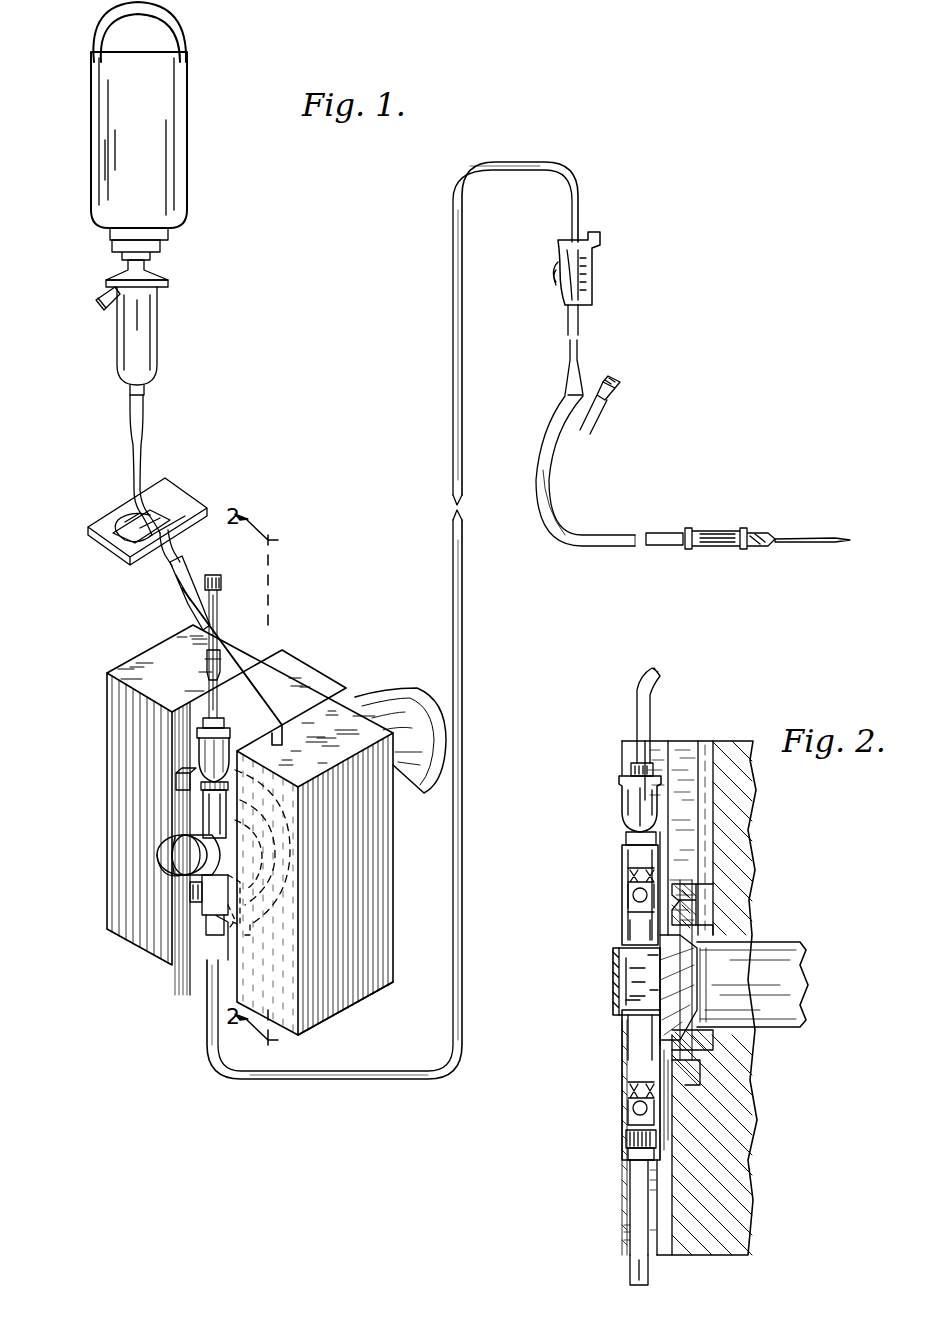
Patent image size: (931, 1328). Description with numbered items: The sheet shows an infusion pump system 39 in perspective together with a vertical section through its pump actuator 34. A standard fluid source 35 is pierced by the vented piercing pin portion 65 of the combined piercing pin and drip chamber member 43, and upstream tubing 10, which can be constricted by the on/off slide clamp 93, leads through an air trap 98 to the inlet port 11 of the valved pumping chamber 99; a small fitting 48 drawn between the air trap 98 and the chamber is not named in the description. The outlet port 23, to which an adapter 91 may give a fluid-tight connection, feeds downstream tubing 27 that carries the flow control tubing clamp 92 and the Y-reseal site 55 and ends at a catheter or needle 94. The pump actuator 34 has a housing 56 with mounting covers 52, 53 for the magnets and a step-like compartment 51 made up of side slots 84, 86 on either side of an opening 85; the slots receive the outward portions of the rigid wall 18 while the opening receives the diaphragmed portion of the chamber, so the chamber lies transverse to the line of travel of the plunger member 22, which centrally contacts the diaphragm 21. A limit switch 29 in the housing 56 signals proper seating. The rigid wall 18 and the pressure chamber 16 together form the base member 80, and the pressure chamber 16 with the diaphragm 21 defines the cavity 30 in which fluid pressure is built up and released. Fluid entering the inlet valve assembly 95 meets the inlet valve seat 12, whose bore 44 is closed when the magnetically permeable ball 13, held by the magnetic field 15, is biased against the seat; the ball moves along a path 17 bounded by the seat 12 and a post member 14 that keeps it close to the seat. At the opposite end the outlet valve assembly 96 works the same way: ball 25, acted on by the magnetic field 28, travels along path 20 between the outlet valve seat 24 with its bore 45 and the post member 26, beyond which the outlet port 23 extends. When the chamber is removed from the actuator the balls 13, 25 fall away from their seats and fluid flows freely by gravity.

In FIG. 1, the upstream tubing 10 is at (135, 460).
In FIG. 2, the upstream tubing 10 is at (642, 685).
In FIG. 1, the inlet port 11 is at (228, 786).
In FIG. 2, the inlet port 11 is at (626, 840).
In FIG. 2, the inlet valve seat 12 is at (628, 874).
In FIG. 2, the inlet flow restricting ball 13 is at (630, 900).
In FIG. 2, the inlet post member 14 is at (628, 935).
In FIG. 1, the magnetic field 15 is at (176, 785).
In FIG. 2, the pressure chamber 16 is at (660, 1005).
In FIG. 2, the path 17 is at (628, 914).
In FIG. 1, the rigid wall 18 is at (259, 852).
In FIG. 2, the rigid wall 18 is at (705, 1075).
In FIG. 2, the path 20 is at (626, 1138).
In FIG. 2, the diaphragm 21 is at (658, 1020).
In FIG. 2, the plunger member 22 is at (805, 962).
In FIG. 1, the outlet port 23 is at (212, 930).
In FIG. 2, the outlet port 23 is at (632, 1155).
In FIG. 2, the outlet valve seat 24 is at (628, 1088).
In FIG. 2, the outlet flow restricting ball 25 is at (634, 1110).
In FIG. 2, the outlet post member 26 is at (630, 1122).
In FIG. 1, the downstream tubing 27 is at (228, 1077).
In FIG. 2, the downstream tubing 27 is at (648, 1275).
In FIG. 1, the magnetic field 28 is at (190, 893).
In FIG. 2, the limit switch 29 is at (750, 1118).
In FIG. 2, the cavity 30 is at (626, 978).
In FIG. 1, the pump actuator 34 is at (400, 825).
In FIG. 2, the pump actuator 34 is at (770, 880).
In FIG. 1, the fluid source 35 is at (98, 108).
In FIG. 1, the infusion pump system 39 is at (118, 630).
In FIG. 1, the drip chamber 43 is at (120, 366).
In FIG. 2, the inlet bore 44 is at (633, 893).
In FIG. 2, the outlet bore 45 is at (625, 1075).
In FIG. 1, the inlet connector 48 is at (222, 715).
In FIG. 2, the inlet connector 48 is at (631, 770).
In FIG. 1, the compartment 51 is at (224, 690).
In FIG. 2, the compartment 51 is at (675, 741).
In FIG. 1, the mounting cover 52 is at (112, 842).
In FIG. 1, the mounting cover 53 is at (310, 1022).
In FIG. 1, the Y-reseal site 55 is at (585, 430).
In FIG. 1, the pump actuator housing 56 is at (395, 958).
In FIG. 1, the vented piercing pin portion 65 is at (120, 262).
In FIG. 2, the base member 80 is at (690, 895).
In FIG. 1, the side slot 84 is at (180, 690).
In FIG. 2, the side slot 84 is at (686, 752).
In FIG. 1, the opening 85 is at (290, 680).
In FIG. 2, the opening 85 is at (712, 752).
In FIG. 1, the side slot 86 is at (286, 736).
In FIG. 2, the adapter 91 is at (628, 1165).
In FIG. 1, the flow control tubing clamp 92 is at (594, 255).
In FIG. 1, the on/off slide clamp 93 is at (165, 495).
In FIG. 1, the needle 94 is at (822, 536).
In FIG. 1, the inlet valve assembly 95 is at (204, 815).
In FIG. 2, the inlet valve assembly 95 is at (622, 858).
In FIG. 1, the outlet valve assembly 96 is at (212, 908).
In FIG. 2, the outlet valve assembly 96 is at (622, 1100).
In FIG. 1, the air trap 98 is at (208, 757).
In FIG. 2, the air trap 98 is at (619, 782).
In FIG. 1, the valved pumping chamber 99 is at (180, 864).
In FIG. 2, the valved pumping chamber 99 is at (613, 964).